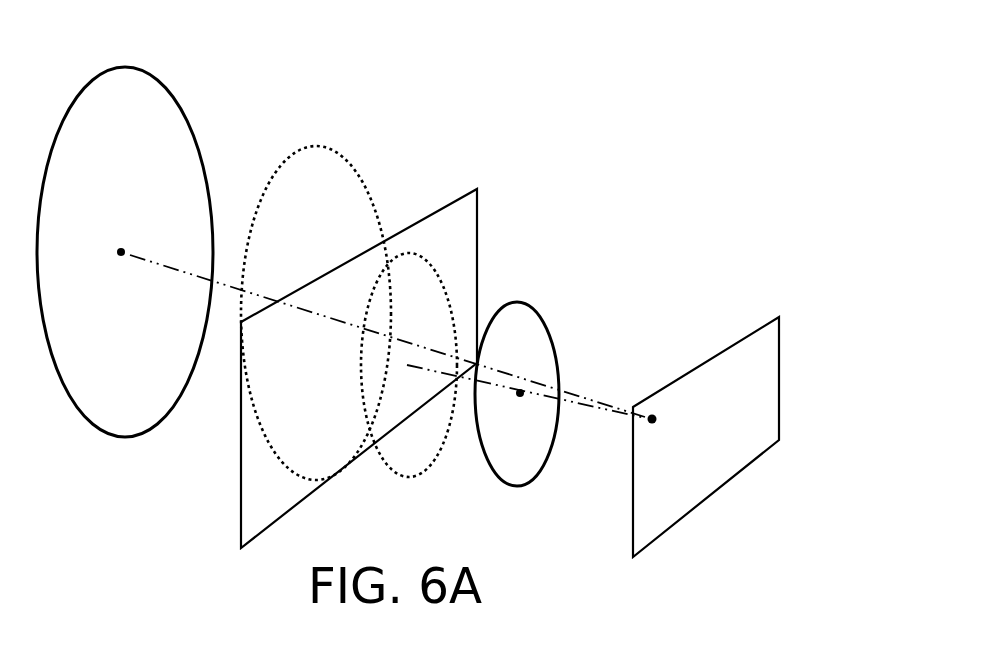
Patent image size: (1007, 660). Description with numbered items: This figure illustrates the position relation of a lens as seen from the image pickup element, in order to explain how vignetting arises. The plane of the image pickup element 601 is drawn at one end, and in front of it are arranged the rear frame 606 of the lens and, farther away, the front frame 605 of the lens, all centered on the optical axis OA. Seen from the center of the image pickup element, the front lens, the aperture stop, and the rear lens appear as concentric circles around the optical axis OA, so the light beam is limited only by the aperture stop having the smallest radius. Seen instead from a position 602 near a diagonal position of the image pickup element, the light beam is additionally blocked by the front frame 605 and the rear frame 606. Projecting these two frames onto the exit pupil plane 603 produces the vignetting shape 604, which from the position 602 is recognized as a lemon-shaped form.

The plane of the image pickup element 601 is at (760, 401).
The position in the vicinity of a diagonal position of the image pickup element 602 is at (648, 421).
The exit pupil plane 603 is at (462, 228).
The vignetting shape 604 is at (383, 297).
The front frame of the lens 605 is at (190, 176).
The rear frame of the lens 606 is at (543, 343).
The optical axis OA is at (227, 284).